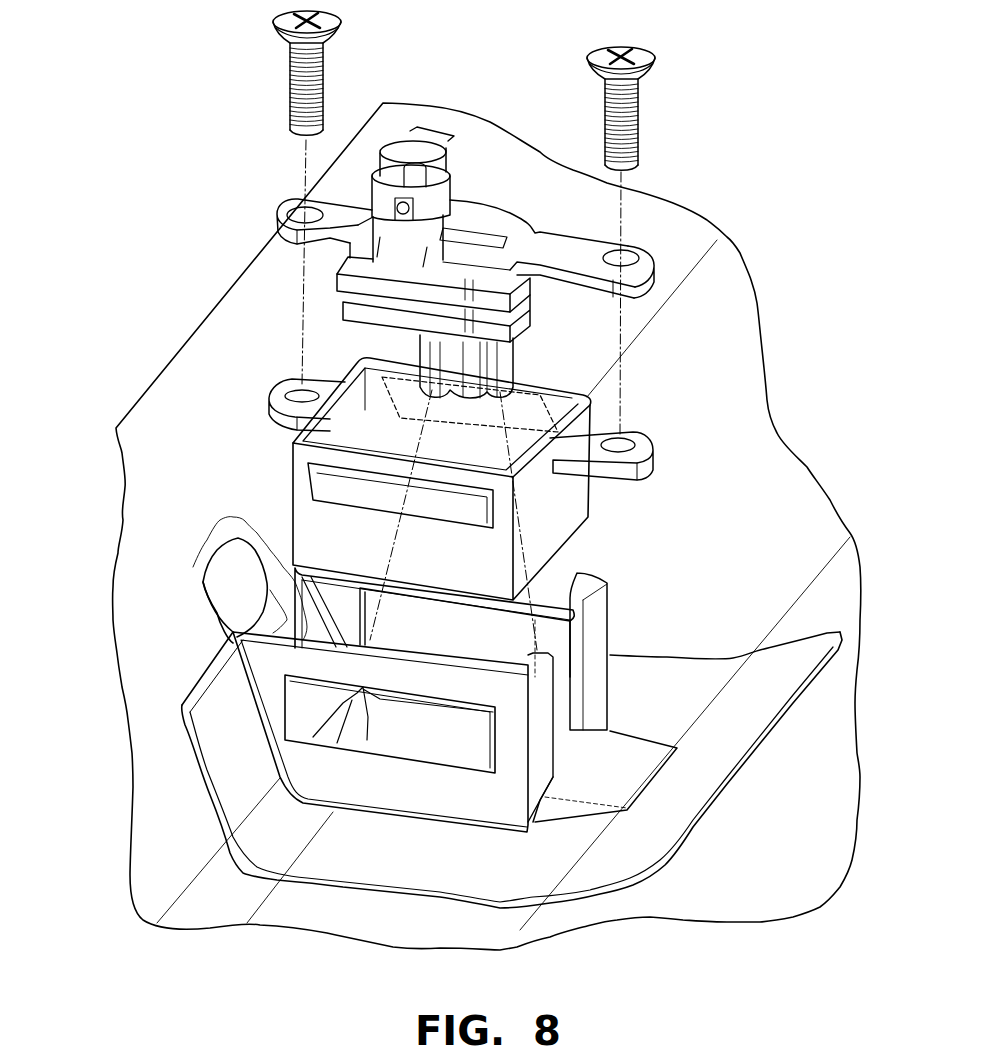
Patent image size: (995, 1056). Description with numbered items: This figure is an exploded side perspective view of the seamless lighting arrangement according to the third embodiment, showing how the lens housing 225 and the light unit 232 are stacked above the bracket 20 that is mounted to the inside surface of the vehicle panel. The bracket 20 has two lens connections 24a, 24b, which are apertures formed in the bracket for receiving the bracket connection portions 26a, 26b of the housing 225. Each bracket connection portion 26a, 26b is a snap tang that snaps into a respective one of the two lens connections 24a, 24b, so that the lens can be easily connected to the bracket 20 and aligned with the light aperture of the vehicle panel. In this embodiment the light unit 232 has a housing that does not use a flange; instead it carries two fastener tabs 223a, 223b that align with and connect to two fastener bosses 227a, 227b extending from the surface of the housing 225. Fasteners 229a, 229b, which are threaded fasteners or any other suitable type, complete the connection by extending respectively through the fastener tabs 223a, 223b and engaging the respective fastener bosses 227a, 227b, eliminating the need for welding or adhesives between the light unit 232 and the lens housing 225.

The bracket 20 is at (413, 803).
The lens connection 24a is at (303, 715).
The lens connection 24b is at (550, 625).
The bracket connection portion 26a is at (323, 483).
The bracket connection portion 26b is at (548, 395).
The housing 225 is at (315, 547).
The fastener boss 227a is at (637, 467).
The fastener boss 227b is at (275, 413).
The light unit 232 is at (480, 162).
The fastener tab 223a is at (637, 284).
The fastener tab 223b is at (283, 232).
The fastener 229a is at (640, 128).
The fastener 229b is at (290, 81).